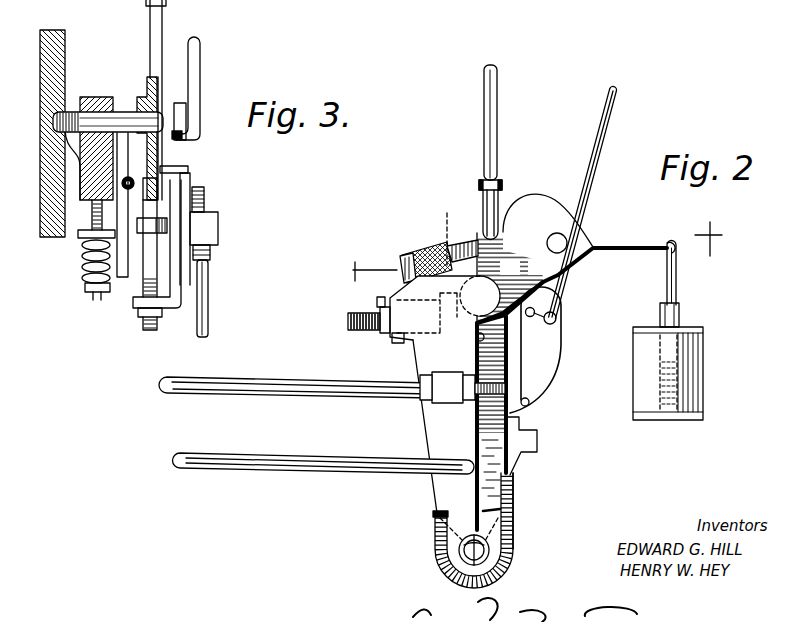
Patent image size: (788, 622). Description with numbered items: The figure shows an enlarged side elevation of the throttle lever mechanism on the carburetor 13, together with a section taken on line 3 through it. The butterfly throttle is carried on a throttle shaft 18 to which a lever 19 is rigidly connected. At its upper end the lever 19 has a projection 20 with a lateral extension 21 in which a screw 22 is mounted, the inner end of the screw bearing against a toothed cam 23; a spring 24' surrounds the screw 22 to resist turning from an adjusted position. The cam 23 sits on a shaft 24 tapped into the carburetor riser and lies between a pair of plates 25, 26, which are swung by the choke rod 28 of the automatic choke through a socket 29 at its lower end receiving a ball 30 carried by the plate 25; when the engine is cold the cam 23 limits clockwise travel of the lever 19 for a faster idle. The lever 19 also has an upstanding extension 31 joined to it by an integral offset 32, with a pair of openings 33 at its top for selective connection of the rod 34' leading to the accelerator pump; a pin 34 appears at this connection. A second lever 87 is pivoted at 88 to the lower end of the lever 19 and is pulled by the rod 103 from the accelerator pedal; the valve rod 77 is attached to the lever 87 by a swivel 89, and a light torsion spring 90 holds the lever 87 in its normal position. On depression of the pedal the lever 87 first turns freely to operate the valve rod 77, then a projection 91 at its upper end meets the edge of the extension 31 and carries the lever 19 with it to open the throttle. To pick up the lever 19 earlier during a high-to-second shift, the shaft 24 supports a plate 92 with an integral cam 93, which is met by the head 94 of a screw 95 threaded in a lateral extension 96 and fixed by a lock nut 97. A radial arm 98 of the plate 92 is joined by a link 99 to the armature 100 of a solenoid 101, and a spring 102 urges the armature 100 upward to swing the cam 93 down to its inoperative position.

In FIG. 2, the section line 3— 3 is at (533, 249).
In FIG. 3, the carburetor 13 is at (67, 50).
In FIG. 2, the throttle shaft 18 is at (512, 338).
In FIG. 2, the lever 19 is at (538, 420).
In FIG. 3, the projection 20 is at (119, 280).
In FIG. 2, the projection 20 is at (437, 243).
In FIG. 3, the lateral extension 21 is at (88, 236).
In FIG. 2, the lateral extension 21 is at (454, 229).
In FIG. 3, the screw 22 is at (85, 287).
In FIG. 2, the screw 22 is at (462, 246).
In FIG. 3, the toothed cam 23 is at (96, 97).
In FIG. 2, the shaft 24 is at (558, 208).
In FIG. 3, the spring 24' is at (73, 259).
In FIG. 2, the spring 24' is at (396, 255).
In FIG. 3, the plate 25 is at (137, 98).
In FIG. 3, the plate 26 is at (86, 112).
In FIG. 2, the choke rod 28 is at (498, 126).
In FIG. 3, the socket 29 is at (158, 197).
In FIG. 2, the socket 29 is at (479, 186).
In FIG. 3, the ball 30 is at (130, 190).
In FIG. 2, the ball 30 is at (499, 211).
In FIG. 3, the upstanding extension 31 is at (190, 150).
In FIG. 2, the upstanding extension 31 is at (562, 358).
In FIG. 3, the integral offset 32 is at (174, 166).
In FIG. 2, the openings 33 is at (557, 315).
In FIG. 3, the pin 34 is at (172, 110).
In FIG. 3, the rod 34' is at (202, 88).
In FIG. 2, the rod 34' is at (590, 202).
In FIG. 3, the valve rod 77 is at (209, 280).
In FIG. 2, the valve rod 77 is at (300, 378).
In FIG. 2, the lever 87 is at (427, 421).
In FIG. 2, the pivot 88 is at (514, 541).
In FIG. 3, the swivel 89 is at (219, 231).
In FIG. 2, the swivel 89 is at (445, 372).
In FIG. 2, the torsion spring 90 is at (511, 508).
In FIG. 3, the projection 91 is at (204, 182).
In FIG. 2, the projection 91 is at (499, 279).
In FIG. 2, the plate 92 is at (588, 232).
In FIG. 2, the cam 93 is at (534, 278).
In FIG. 3, the head 94 is at (143, 223).
In FIG. 2, the head 94 is at (447, 316).
In FIG. 3, the screw 95 is at (149, 331).
In FIG. 2, the screw 95 is at (348, 319).
In FIG. 3, the lateral extension 96 is at (169, 310).
In FIG. 2, the lateral extension 96 is at (393, 344).
In FIG. 2, the lock nut 97 is at (378, 300).
In FIG. 3, the arm 98 is at (163, 40).
In FIG. 2, the arm 98 is at (647, 241).
In FIG. 3, the link 99 is at (166, 4).
In FIG. 2, the link 99 is at (677, 291).
In FIG. 2, the armature 100 is at (680, 317).
In FIG. 2, the solenoid 101 is at (704, 346).
In FIG. 2, the spring 102 is at (680, 379).
In FIG. 2, the rod 103 is at (305, 473).